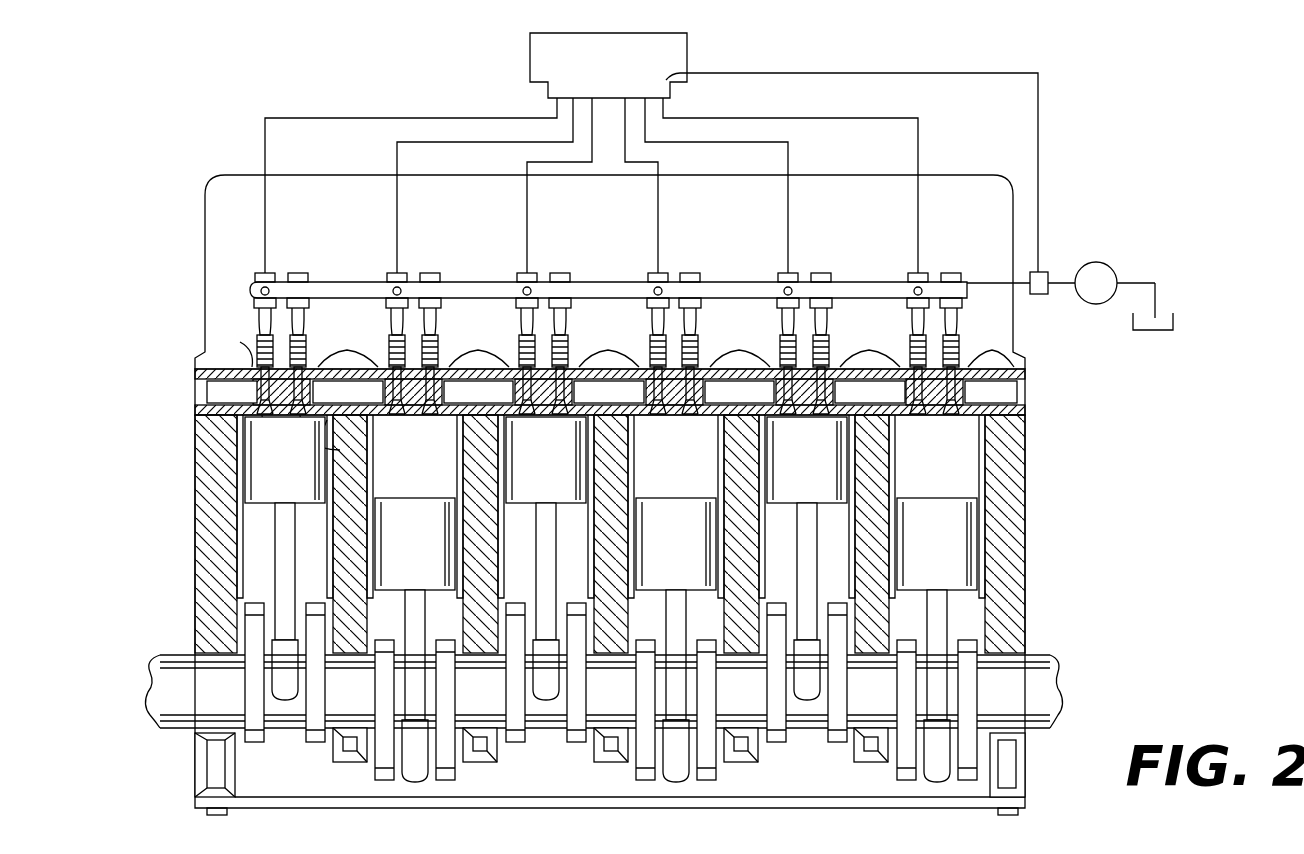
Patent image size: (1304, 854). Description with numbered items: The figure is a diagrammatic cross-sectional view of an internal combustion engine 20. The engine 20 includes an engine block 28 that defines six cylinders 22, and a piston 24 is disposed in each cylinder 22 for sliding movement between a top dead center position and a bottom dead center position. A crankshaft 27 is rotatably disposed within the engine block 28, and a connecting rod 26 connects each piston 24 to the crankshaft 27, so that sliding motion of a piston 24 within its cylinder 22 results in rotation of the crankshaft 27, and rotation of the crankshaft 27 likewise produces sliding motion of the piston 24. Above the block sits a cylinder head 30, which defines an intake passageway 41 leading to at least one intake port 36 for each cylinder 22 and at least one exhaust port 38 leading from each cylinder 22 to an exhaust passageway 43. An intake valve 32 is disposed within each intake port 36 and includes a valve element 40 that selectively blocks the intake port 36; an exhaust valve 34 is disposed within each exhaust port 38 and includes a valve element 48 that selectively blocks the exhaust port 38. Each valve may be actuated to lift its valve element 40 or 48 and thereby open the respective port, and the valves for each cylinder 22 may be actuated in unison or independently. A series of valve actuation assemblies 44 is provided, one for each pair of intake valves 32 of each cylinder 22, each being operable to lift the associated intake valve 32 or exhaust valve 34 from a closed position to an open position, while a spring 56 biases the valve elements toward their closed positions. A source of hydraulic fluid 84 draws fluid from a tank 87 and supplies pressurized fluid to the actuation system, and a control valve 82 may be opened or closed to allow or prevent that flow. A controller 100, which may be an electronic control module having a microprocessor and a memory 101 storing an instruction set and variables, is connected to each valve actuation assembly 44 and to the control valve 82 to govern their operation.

The engine 20 is at (1078, 165).
The cylinder 22 is at (296, 559).
The piston 24 is at (262, 503).
The connecting rod 26 is at (275, 580).
The crankshaft 27 is at (177, 697).
The engine block 28 is at (205, 430).
The cylinder head 30 is at (1026, 390).
The intake valve 32 is at (609, 344).
The exhaust valve 34 is at (613, 344).
The intake port 36 is at (290, 430).
The exhaust port 38 is at (262, 425).
The valve element 40 is at (270, 445).
The intake passageway 41 is at (334, 402).
The exhaust passageway 43 is at (465, 402).
The valve actuation assembly 44 is at (268, 273).
The valve element 48 is at (205, 392).
The spring 56 is at (258, 318).
The control valve 82 is at (1040, 294).
The source of hydraulic fluid 84 is at (1097, 264).
The tank 87 is at (1175, 318).
The controller 100 is at (596, 64).
The memory 101 is at (668, 79).